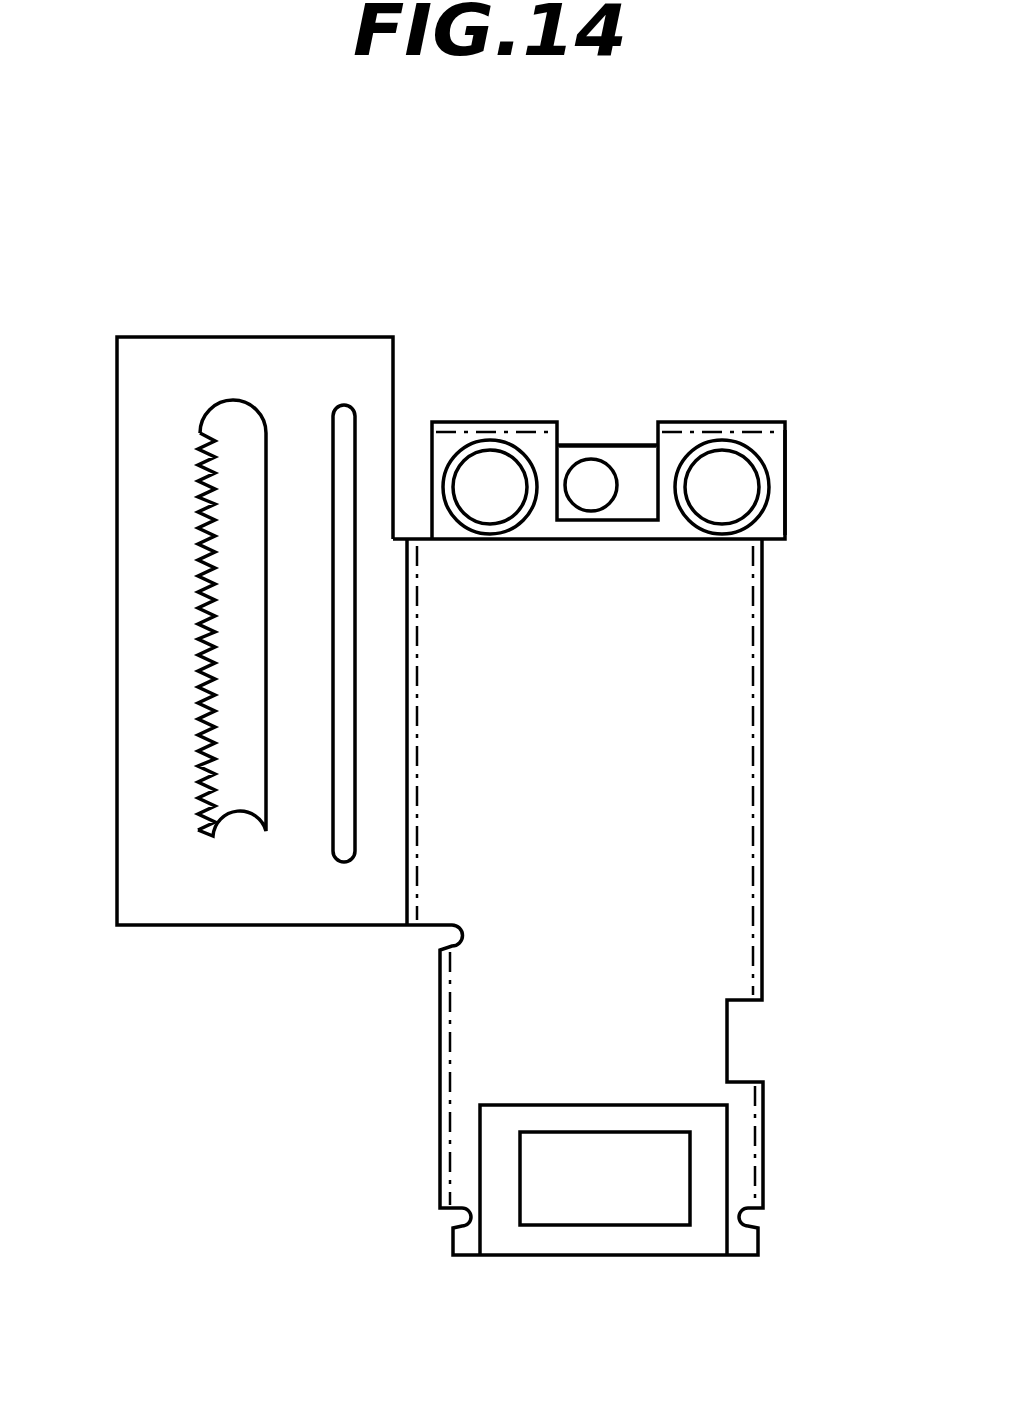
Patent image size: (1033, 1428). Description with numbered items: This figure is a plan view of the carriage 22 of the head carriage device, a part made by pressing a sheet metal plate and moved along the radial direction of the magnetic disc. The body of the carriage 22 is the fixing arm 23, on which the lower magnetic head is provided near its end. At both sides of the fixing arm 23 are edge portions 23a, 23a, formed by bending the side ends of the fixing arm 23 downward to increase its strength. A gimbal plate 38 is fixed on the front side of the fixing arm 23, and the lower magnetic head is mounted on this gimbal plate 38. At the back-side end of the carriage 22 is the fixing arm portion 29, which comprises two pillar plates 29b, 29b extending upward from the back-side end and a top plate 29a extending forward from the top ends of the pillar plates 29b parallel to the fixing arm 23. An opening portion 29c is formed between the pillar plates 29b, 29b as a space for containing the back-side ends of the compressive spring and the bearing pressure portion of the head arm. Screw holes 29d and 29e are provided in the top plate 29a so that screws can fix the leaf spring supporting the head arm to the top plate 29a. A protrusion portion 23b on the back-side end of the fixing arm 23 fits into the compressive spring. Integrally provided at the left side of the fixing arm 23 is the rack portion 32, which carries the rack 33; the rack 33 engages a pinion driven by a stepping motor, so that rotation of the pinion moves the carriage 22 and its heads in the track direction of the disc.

The carriage 22 is at (545, 172).
The fixing arm 23 is at (740, 787).
The edge portions 23a is at (762, 640).
The protrusion portion 23b is at (607, 460).
The fixing arm portion 29 is at (786, 457).
The top plate 29a is at (790, 445).
The pillar plates 29b is at (520, 422).
The opening portion 29c is at (656, 433).
The screw hole 29d is at (748, 497).
The screw hole 29e is at (485, 462).
The rack portion 32 is at (272, 336).
The rack 33 is at (200, 518).
The gimbal plate 38 is at (703, 1222).